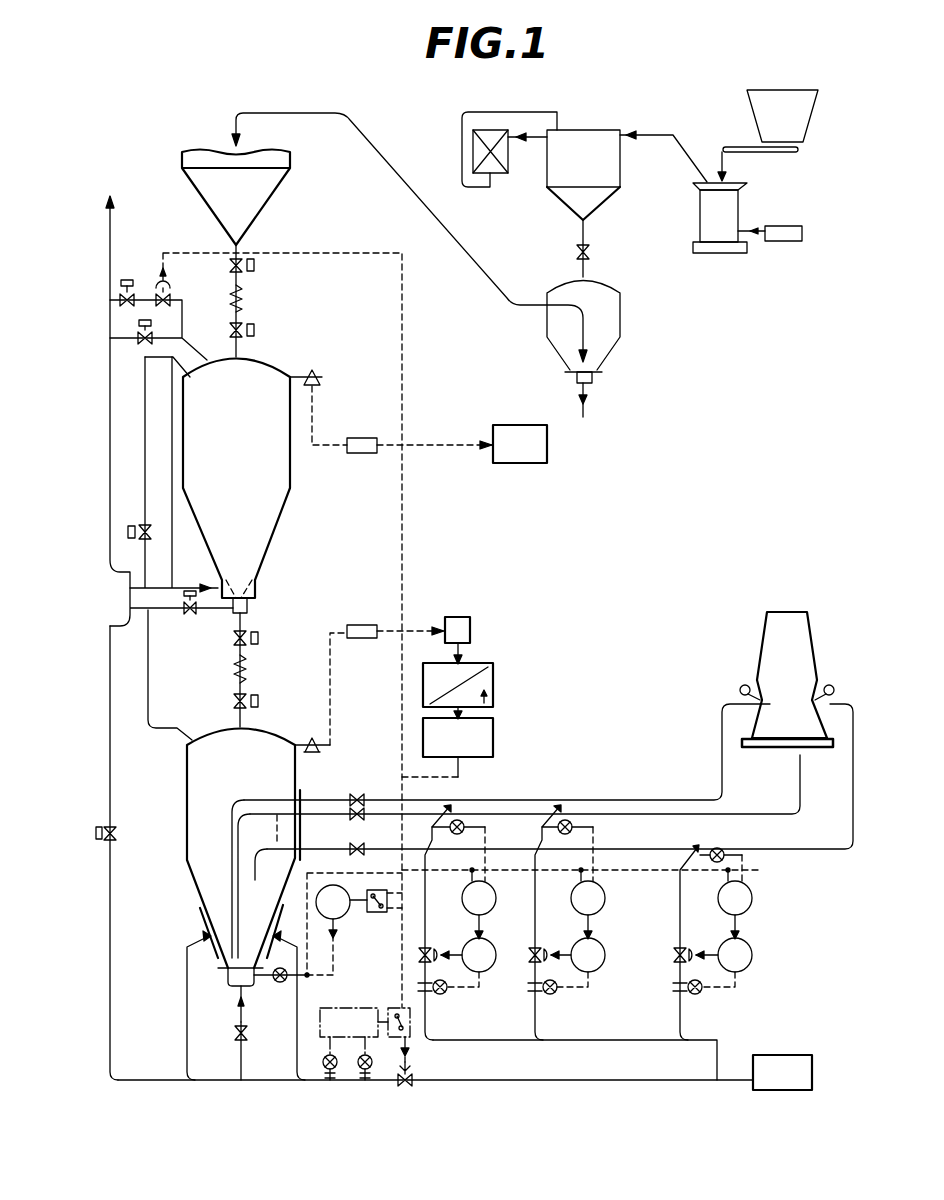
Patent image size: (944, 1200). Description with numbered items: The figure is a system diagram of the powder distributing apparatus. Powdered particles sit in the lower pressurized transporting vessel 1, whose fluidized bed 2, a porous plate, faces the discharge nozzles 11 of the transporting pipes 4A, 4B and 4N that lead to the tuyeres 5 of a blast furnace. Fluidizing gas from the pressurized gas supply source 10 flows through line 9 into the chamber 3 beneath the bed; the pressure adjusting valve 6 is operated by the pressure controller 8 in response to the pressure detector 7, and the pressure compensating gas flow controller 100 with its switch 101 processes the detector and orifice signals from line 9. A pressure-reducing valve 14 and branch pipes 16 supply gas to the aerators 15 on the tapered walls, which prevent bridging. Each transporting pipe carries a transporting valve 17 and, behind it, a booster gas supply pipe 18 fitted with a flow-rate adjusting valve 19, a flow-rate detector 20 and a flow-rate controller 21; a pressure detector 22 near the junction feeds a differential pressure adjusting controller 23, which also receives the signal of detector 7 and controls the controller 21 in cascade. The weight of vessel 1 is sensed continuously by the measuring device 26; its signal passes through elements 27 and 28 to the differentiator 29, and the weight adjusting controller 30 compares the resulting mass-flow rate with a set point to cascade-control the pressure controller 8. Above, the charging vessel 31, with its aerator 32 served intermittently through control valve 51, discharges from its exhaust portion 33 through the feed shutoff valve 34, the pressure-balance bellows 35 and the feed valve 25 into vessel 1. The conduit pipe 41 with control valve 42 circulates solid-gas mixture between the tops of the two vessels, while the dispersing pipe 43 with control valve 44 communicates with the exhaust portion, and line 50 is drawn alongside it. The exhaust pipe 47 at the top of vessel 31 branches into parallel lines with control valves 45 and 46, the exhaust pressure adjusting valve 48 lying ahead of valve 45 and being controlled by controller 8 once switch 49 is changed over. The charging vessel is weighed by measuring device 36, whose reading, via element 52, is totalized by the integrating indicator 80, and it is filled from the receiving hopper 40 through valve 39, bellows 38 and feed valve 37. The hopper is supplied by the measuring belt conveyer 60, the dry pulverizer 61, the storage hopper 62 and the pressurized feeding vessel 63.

The transporting vessel 1 is at (187, 760).
The fluidized bed 2 is at (228, 976).
The chamber 3 is at (236, 986).
The transporting pipe 4A is at (537, 799).
The transporting pipe 4B is at (624, 815).
The gas header pipe 4N is at (817, 850).
The tuyeres 5 is at (760, 700).
The pressure adjusting valve 6 is at (415, 1078).
The pressure detector 7 is at (285, 980).
The pressure controller 8 is at (338, 920).
The line 9 is at (478, 1080).
The pressurized gas supply source 10 is at (780, 1055).
The discharge nozzles 11 is at (255, 872).
The pressure-reducing valve 14 is at (248, 1035).
The aerators 15 is at (203, 922).
The branch pipes 16 is at (187, 1032).
The transporting valves 17 is at (366, 826).
The booster gas supply pipes 18 is at (425, 930).
The flow-rate adjusting valve 19 is at (445, 946).
The flow-rate detector 20 is at (447, 994).
The flow-rate controller 21 is at (493, 950).
The pressure detector 22 is at (460, 820).
The differential pressure adjusting controller 23 is at (498, 890).
The feed valve 25 is at (256, 704).
The measuring device 26 is at (320, 752).
The pressure detector 27 is at (360, 640).
The converter 28 is at (472, 630).
The differentiator 29 is at (493, 685).
The weight adjusting controller 30 is at (493, 740).
The charging vessel 31 is at (183, 448).
The aerator 32 is at (252, 596).
The exhaust portion 33 is at (247, 606).
The feed shutoff valve 34 is at (256, 641).
The dead weight isolating bellows 35 is at (232, 670).
The measuring device 36 is at (311, 372).
The feed valve 37 is at (256, 328).
The bellows 38 is at (245, 296).
The valve 39 is at (256, 266).
The receiving hopper 40 is at (268, 190).
The conduit pipe 41 is at (147, 498).
The control valve 42 is at (152, 536).
The dispersing pipe 43 is at (110, 320).
The control valve 44 is at (186, 612).
The control valve 45 is at (127, 280).
The control valve 46 is at (150, 345).
The exhaust pipe 47 is at (198, 345).
The exhaust pressure adjusting valve 48 is at (170, 290).
The switch 49 is at (382, 912).
The pipe 50 is at (110, 945).
The control valve 51 is at (118, 834).
The pressure detector 52 is at (364, 437).
The measuring belt conveyer 60 is at (796, 150).
The dry pulverizer 61 is at (740, 202).
The storage hopper 62 is at (622, 172).
The pressurized feeding vessel 63 is at (622, 305).
The integrating indicator 80 is at (548, 445).
The pressure compensating gas flow controller 100 is at (325, 1008).
The switch 101 is at (395, 1008).